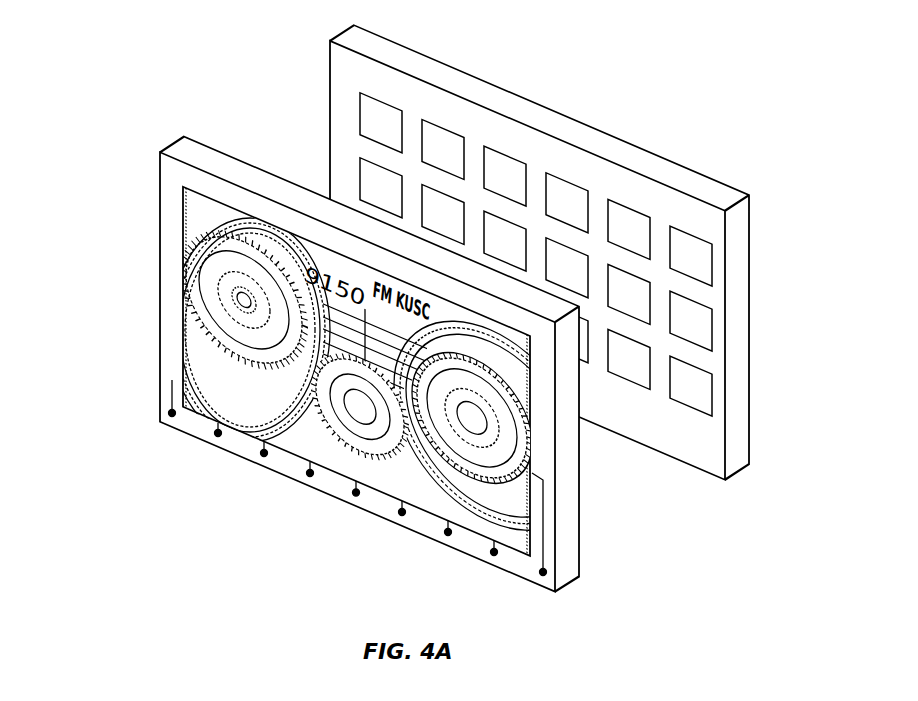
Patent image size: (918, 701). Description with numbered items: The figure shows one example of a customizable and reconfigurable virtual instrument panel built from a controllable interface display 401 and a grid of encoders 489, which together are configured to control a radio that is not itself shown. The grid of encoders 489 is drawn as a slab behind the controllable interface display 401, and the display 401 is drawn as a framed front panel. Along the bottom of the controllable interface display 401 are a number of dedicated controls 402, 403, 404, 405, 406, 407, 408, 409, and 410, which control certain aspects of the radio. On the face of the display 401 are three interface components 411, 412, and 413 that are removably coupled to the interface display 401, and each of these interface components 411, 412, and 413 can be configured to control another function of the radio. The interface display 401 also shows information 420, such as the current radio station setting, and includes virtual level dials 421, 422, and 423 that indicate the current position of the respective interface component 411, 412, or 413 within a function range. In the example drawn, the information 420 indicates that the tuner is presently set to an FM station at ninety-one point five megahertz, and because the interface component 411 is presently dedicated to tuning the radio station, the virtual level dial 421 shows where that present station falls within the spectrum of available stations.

The controllable interface display 401 is at (157, 238).
The dedicated control 402 is at (168, 426).
The dedicated control 403 is at (212, 445).
The dedicated control 404 is at (258, 465).
The dedicated control 405 is at (304, 485).
The dedicated control 406 is at (350, 505).
The dedicated control 407 is at (396, 525).
The dedicated control 408 is at (442, 544).
The dedicated control 409 is at (488, 564).
The dedicated control 410 is at (537, 585).
The interface component 411 is at (222, 242).
The interface component 412 is at (389, 446).
The interface component 413 is at (507, 434).
The information 420 is at (338, 300).
The virtual level dial 421 is at (249, 240).
The virtual level dial 422 is at (419, 448).
The virtual level dial 423 is at (510, 355).
The grid of encoders 489 is at (430, 54).